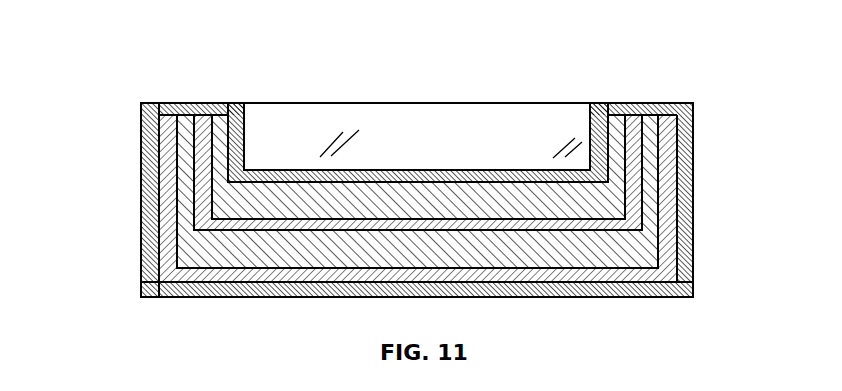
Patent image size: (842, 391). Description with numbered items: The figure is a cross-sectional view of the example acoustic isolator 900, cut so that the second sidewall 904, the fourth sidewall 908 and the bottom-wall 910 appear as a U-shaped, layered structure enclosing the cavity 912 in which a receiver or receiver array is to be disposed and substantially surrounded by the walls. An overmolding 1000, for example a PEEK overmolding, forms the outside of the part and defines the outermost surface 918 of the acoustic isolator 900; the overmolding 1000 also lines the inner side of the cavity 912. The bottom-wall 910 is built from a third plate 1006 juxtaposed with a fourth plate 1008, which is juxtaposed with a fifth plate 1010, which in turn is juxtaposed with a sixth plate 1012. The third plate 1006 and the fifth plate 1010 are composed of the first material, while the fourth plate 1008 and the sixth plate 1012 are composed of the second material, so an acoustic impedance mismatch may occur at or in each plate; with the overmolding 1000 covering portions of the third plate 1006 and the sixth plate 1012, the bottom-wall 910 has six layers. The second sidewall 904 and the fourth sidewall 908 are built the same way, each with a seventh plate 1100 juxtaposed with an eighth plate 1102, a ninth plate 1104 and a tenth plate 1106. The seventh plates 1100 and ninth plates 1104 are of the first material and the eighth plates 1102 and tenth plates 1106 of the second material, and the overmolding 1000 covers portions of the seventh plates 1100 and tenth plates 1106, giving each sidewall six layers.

The acoustic isolator 900 is at (133, 98).
The second sidewall 904 is at (693, 143).
The fourth sidewall 908 is at (142, 145).
The bottom-wall 910 is at (480, 168).
The cavity 912 is at (463, 128).
The outermost surface 918 is at (437, 146).
The overmolding 1000 is at (243, 138).
The third plate 1006 is at (442, 281).
The fourth plate 1008 is at (375, 250).
The fifth plate 1010 is at (345, 225).
The sixth plate 1012 is at (312, 202).
The seventh plate 1100 is at (168, 120).
The eighth plate 1102 is at (183, 120).
The ninth plate 1104 is at (203, 127).
The tenth plate 1106 is at (670, 0).